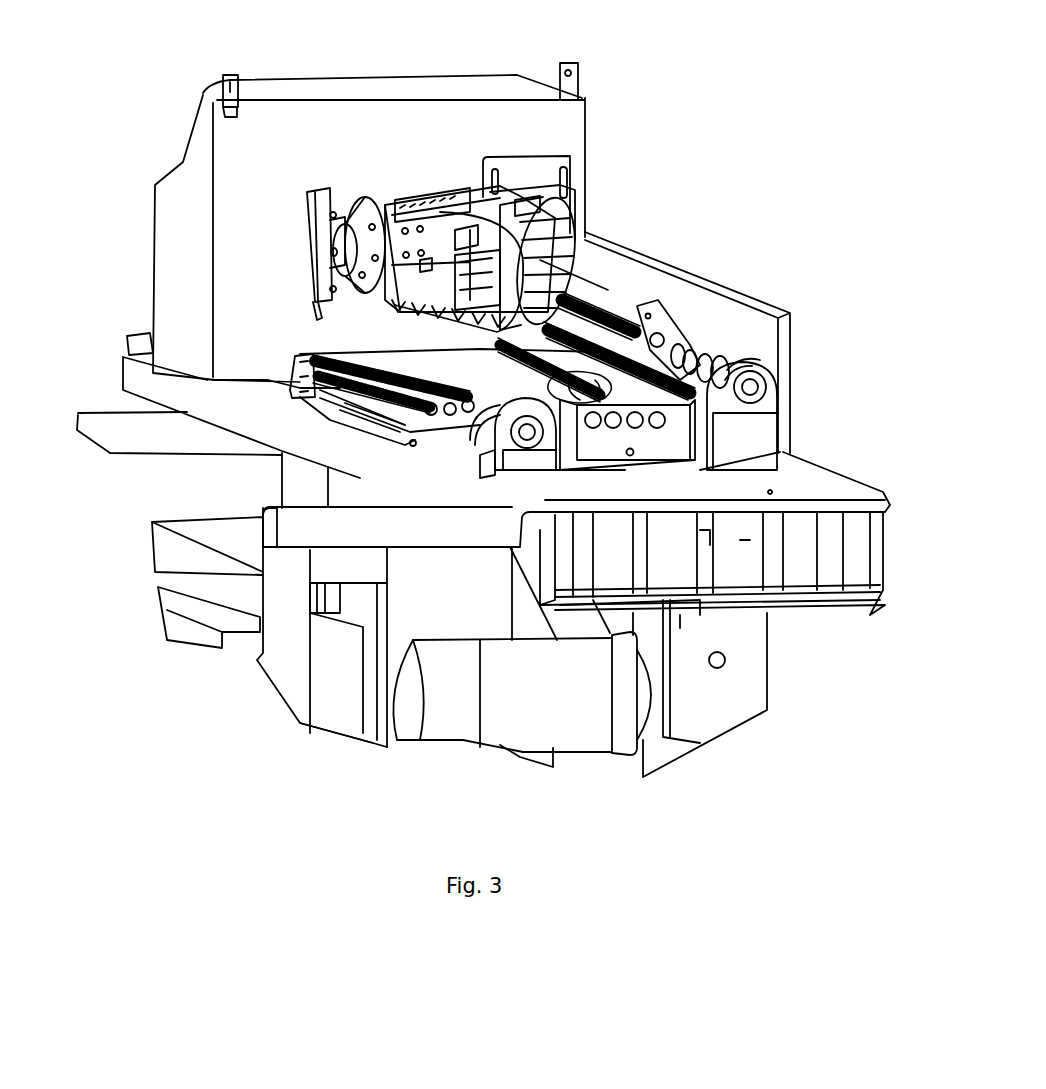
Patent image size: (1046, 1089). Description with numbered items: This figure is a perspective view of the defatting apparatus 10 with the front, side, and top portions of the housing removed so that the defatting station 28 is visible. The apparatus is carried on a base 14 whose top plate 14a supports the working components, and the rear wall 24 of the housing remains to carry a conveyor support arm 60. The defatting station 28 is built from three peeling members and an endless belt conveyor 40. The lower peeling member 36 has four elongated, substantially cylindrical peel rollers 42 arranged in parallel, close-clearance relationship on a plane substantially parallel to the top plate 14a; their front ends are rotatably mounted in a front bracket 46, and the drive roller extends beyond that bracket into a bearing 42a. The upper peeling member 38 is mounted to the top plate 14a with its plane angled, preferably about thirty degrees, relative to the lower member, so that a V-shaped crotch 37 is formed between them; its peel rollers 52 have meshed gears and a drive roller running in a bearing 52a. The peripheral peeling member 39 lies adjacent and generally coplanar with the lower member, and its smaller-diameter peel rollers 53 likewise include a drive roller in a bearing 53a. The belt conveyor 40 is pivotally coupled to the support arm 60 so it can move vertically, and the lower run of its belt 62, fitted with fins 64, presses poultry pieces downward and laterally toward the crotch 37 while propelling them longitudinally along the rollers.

The defatting apparatus 10 is at (794, 89).
The base 14 is at (255, 787).
The top plate 14a is at (815, 480).
The rear wall 24 is at (238, 258).
The defatting station 28 is at (268, 319).
The lower peeling member 36 is at (608, 463).
The V-shaped crotch 37 is at (570, 378).
The upper peeling member 38 is at (613, 294).
The peripheral peeling member 39 is at (347, 395).
The endless belt conveyor 40 is at (389, 160).
The peel rollers 42 is at (627, 428).
The bearing 42a is at (680, 433).
The front bracket 46 is at (648, 432).
The peel rollers 52 is at (628, 322).
The bearing 52a is at (757, 437).
The peel rollers 53 is at (320, 397).
The bearing 53a is at (592, 399).
The conveyor support arm 60 is at (350, 240).
The belt 62 is at (443, 195).
The fins 64 is at (560, 200).